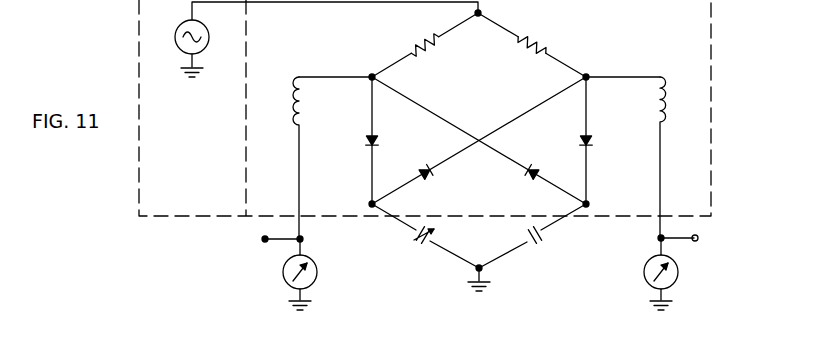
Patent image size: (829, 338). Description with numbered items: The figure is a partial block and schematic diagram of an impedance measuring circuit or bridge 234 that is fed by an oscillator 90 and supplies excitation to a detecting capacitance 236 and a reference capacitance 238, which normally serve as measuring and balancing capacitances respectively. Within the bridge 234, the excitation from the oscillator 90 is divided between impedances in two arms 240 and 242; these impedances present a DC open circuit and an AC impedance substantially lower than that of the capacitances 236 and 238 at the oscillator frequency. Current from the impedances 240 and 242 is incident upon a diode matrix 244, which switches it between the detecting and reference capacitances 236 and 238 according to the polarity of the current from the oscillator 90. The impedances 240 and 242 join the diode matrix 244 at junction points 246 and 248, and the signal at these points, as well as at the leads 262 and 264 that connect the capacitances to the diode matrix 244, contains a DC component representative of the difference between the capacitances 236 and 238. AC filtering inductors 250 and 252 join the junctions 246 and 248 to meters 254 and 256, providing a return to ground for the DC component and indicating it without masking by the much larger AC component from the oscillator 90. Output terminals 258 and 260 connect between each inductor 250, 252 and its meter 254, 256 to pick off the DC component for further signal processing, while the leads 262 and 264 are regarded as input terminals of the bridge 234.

The oscillator 90 is at (209, 33).
The impedance measuring circuit or bridge 234 is at (712, 45).
The detecting capacitance 236 is at (415, 247).
The reference capacitance 238 is at (543, 247).
The arm impedance 240 is at (420, 40).
The arm impedance 242 is at (542, 40).
The diode matrix 244 is at (428, 166).
The junction point 246 is at (371, 75).
The junction point 248 is at (588, 75).
The AC filtering inductor 250 is at (306, 101).
The AC filtering inductor 252 is at (654, 101).
The meter 254 is at (285, 279).
The meter 256 is at (680, 278).
The output terminal 258 is at (258, 242).
The output terminal 260 is at (700, 241).
The lead 262 is at (403, 222).
The lead 264 is at (558, 222).